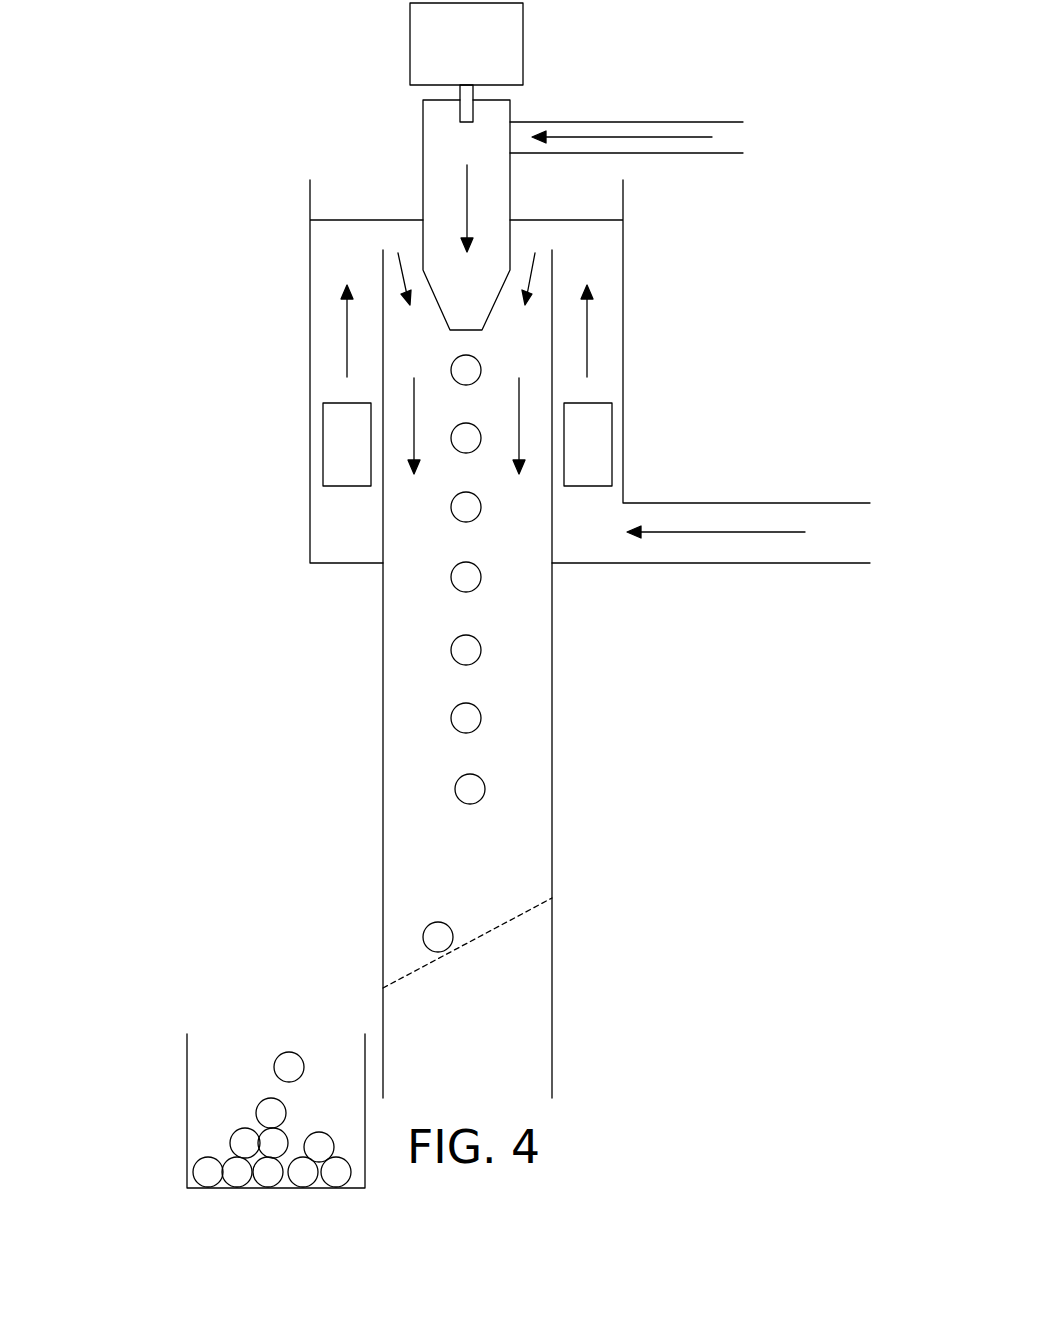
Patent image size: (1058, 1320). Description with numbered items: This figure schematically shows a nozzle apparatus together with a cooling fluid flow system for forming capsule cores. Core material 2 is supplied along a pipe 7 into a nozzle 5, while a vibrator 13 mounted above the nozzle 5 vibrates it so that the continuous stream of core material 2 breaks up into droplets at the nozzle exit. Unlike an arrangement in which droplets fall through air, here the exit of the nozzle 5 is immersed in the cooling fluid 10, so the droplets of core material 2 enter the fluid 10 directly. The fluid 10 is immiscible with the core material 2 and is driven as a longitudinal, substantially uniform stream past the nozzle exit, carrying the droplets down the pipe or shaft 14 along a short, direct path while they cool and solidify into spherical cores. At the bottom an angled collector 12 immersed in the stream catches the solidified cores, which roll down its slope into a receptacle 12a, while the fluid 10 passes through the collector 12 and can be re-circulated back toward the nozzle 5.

The vibrator 13 is at (452, 57).
The nozzle 5 is at (423, 118).
The pipe 7 is at (627, 122).
The core material 2 is at (735, 150).
The pipe or shaft 14 is at (383, 815).
The fluid 10 is at (399, 505).
The collector 12 is at (532, 908).
The receptacle 12a is at (187, 1063).